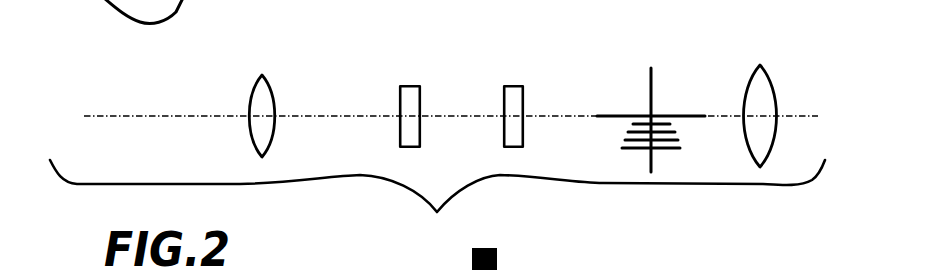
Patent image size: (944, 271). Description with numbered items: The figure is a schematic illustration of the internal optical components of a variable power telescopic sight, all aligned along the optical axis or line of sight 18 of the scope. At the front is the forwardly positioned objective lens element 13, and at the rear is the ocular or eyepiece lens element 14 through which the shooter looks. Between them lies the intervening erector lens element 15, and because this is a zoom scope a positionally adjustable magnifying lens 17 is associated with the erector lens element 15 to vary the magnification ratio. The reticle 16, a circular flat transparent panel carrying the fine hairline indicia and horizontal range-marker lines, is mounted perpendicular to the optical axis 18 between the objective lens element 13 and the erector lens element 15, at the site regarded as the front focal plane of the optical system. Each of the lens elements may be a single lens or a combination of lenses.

The objective lens element 13 is at (769, 67).
The ocular or eyepiece lens element 14 is at (263, 77).
The erector lens element 15 is at (515, 84).
The reticle 16 is at (652, 78).
The positionally adjustable magnifying lens 17 is at (412, 84).
The optical axis or line of sight 18 is at (121, 117).